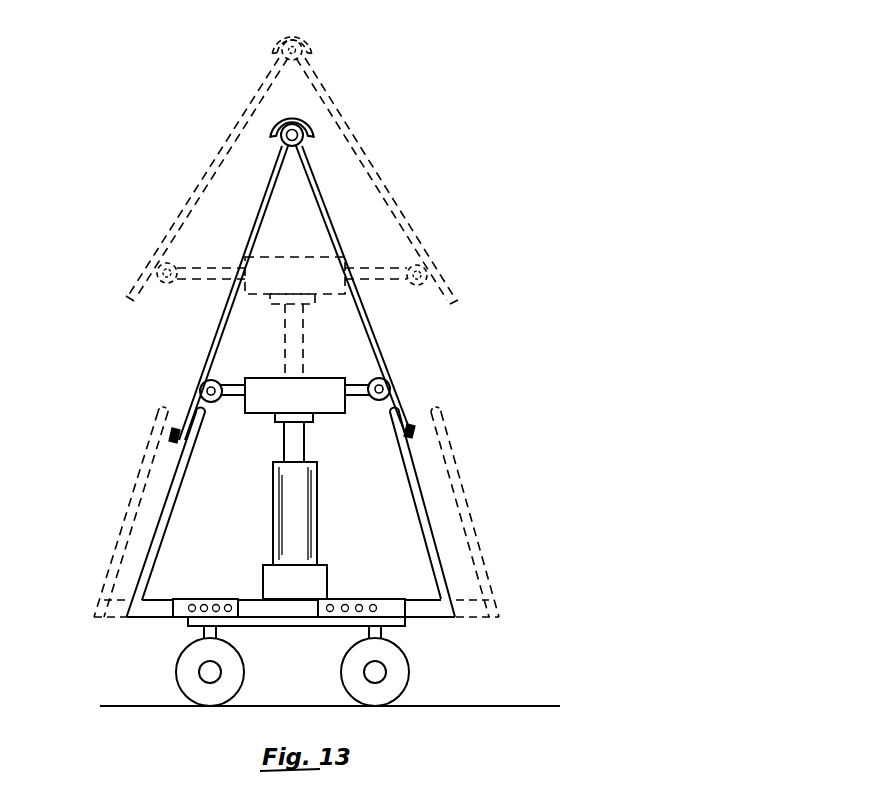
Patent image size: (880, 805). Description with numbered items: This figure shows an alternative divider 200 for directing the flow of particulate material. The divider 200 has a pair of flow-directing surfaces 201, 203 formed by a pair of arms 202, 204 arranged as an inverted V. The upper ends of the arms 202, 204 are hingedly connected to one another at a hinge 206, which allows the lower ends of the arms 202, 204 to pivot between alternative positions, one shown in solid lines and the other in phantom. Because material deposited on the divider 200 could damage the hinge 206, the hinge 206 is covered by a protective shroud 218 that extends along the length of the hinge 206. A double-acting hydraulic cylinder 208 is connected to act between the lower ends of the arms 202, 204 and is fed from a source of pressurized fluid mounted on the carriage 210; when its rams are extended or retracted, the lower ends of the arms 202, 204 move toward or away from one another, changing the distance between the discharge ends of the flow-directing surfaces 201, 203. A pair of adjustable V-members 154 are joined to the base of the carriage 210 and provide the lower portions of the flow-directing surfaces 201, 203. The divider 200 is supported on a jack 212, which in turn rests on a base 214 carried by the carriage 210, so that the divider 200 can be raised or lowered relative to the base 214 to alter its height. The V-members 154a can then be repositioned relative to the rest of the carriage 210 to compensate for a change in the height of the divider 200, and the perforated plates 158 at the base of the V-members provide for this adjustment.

The divider 200 is at (314, 357).
The flow-directing surface 201 is at (212, 167).
The arm 202 is at (166, 233).
The flow-directing surface 203 is at (384, 180).
The arm 204 is at (415, 228).
The hinge 206 is at (306, 55).
The double-acting hydraulic cylinder 208 is at (320, 298).
The carriage 210 is at (290, 627).
The jack 212 is at (299, 499).
The base 214 is at (342, 598).
The protective shroud 218 is at (311, 36).
The adjustable V-member 154 is at (122, 531).
The V-member 154a is at (140, 618).
The perforated adjustment plate 158 is at (179, 605).